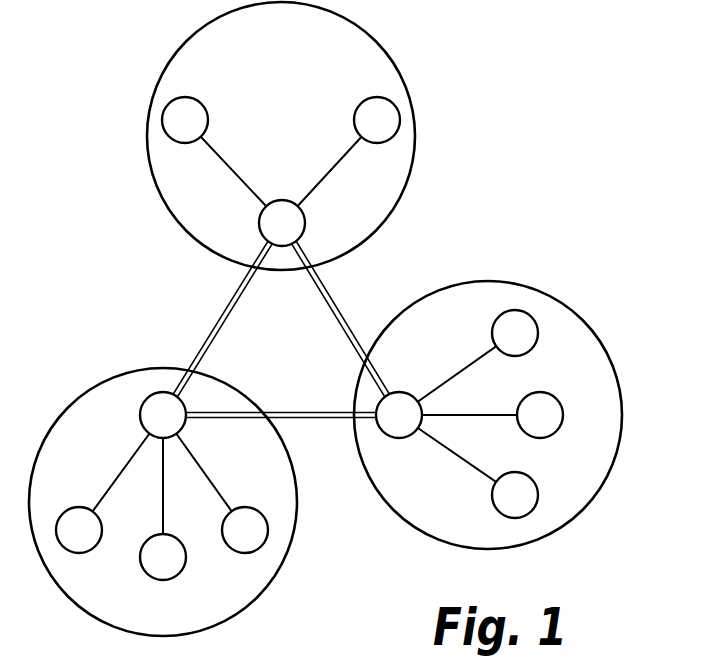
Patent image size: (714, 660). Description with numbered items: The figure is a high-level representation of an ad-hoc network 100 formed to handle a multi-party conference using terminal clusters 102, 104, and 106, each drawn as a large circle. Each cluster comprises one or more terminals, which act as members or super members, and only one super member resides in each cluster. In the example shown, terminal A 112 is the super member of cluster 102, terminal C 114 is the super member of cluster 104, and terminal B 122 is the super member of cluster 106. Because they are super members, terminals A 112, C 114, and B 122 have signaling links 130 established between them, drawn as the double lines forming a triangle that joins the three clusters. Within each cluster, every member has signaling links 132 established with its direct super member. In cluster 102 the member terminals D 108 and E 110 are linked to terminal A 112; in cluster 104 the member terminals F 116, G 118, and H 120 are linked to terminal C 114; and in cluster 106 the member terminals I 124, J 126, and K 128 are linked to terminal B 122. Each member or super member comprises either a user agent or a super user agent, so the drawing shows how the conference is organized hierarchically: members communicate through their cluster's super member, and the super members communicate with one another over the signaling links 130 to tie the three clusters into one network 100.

The ad-hoc network 100 is at (472, 188).
The terminal cluster 102 is at (387, 45).
The terminal cluster 104 is at (570, 307).
The terminal cluster 106 is at (288, 557).
The node D 108 is at (207, 107).
The node E 110 is at (357, 110).
The terminal A 112 is at (306, 235).
The terminal C 114 is at (398, 393).
The node F 116 is at (530, 353).
The node G 118 is at (564, 415).
The node H 120 is at (538, 495).
The terminal B 122 is at (140, 423).
The node I 124 is at (73, 507).
The node J 126 is at (148, 573).
The node K 128 is at (237, 553).
The signaling links 130 is at (341, 323).
The signaling links 132 is at (232, 167).